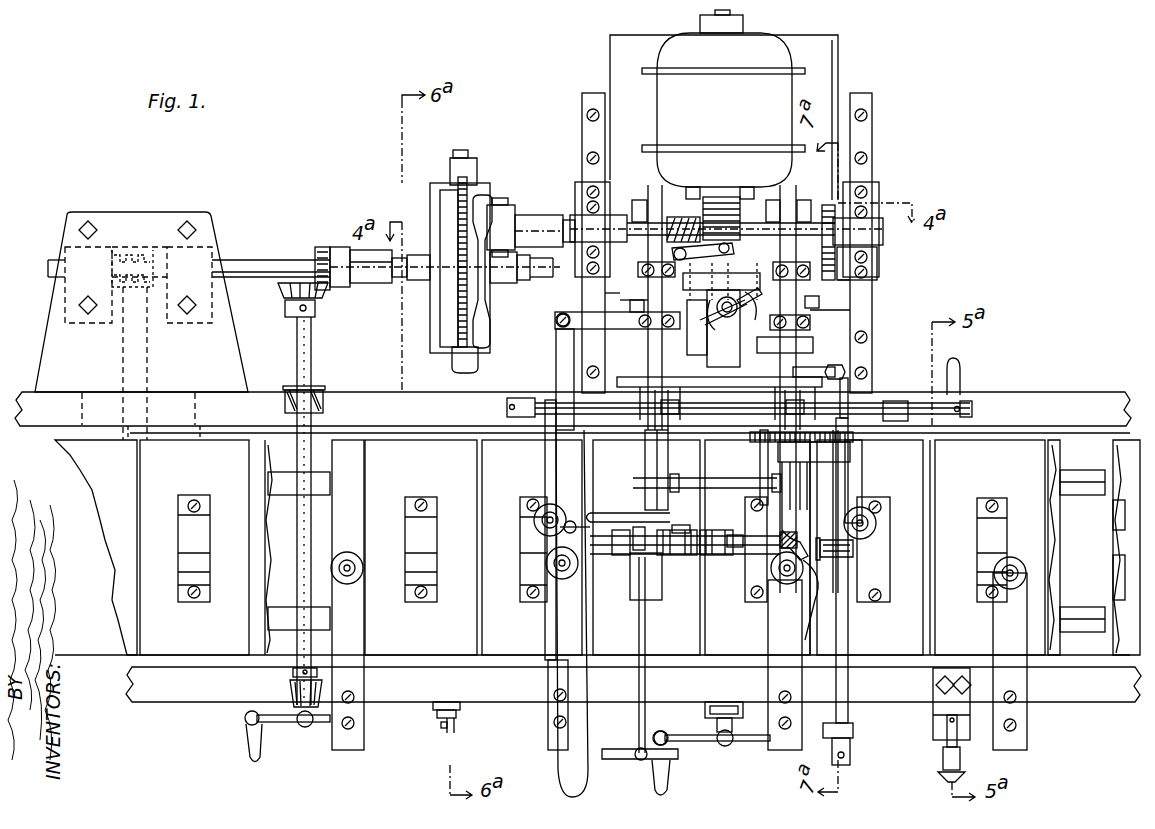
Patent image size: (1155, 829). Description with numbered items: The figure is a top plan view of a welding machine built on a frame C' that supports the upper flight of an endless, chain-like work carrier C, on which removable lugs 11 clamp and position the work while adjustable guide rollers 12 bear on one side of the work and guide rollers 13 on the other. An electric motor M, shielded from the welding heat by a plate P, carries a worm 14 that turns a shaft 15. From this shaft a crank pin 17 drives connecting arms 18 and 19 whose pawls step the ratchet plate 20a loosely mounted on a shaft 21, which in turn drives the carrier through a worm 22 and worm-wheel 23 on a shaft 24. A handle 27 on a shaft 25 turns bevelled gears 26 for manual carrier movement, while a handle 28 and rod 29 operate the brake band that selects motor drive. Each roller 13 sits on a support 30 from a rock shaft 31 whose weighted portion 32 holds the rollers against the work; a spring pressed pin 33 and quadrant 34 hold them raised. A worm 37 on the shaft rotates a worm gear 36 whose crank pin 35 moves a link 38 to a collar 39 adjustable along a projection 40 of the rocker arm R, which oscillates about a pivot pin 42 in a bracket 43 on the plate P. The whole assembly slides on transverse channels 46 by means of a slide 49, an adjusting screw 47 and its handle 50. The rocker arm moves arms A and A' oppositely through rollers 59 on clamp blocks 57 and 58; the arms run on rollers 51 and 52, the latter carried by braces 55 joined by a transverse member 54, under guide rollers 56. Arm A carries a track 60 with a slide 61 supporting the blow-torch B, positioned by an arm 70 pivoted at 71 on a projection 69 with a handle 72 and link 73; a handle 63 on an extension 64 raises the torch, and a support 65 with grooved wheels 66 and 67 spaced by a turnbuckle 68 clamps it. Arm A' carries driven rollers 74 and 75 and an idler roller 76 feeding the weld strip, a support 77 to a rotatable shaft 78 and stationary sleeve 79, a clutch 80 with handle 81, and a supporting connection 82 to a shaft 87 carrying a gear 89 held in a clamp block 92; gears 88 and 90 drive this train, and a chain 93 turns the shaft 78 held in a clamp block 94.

The removable lugs 11 is at (597, 547).
The guide rollers 12 is at (364, 568).
The guide rollers 13 is at (536, 523).
The worm 14 is at (741, 218).
The shaft 15 is at (878, 268).
The crank pin 17 is at (473, 228).
The connecting arm 18 is at (490, 207).
The connecting arm 19 is at (480, 300).
The plate 20a is at (440, 232).
The shaft 21 is at (259, 259).
The worm 22 is at (128, 246).
The worm-wheel 23 is at (80, 290).
The shaft 24 is at (150, 374).
The shaft 25 is at (297, 354).
The bevelled gears 26 is at (288, 288).
The handle 27 is at (246, 738).
The handle 28 is at (447, 735).
The rod 29 is at (447, 433).
The support 30 is at (545, 462).
The rock shaft 31 is at (975, 410).
The portion 32 is at (961, 372).
The spring pressed pin 33 is at (945, 750).
The quadrant 34 is at (934, 728).
The crank pin 35 is at (668, 244).
The worm gear 36 is at (640, 270).
The worm 37 is at (690, 188).
The link 38 is at (703, 251).
The collar 39 is at (733, 274).
The projection 40 is at (746, 188).
The pivot pin 42 is at (708, 318).
The bracket 43 is at (751, 389).
The transverse channels 46 is at (584, 123).
The adjusting screw 47 is at (718, 728).
The slide 49 is at (710, 315).
The handle 50 is at (750, 742).
The rollers 51 is at (638, 200).
The rollers 52 is at (684, 475).
The transverse member 54 is at (720, 490).
The braces 55 is at (850, 390).
The guide rollers 56 is at (640, 408).
The clamp block 57 is at (628, 292).
The clamp block 58 is at (650, 330).
The rollers 59 is at (660, 295).
The supporting track 60 is at (612, 513).
The slide 61 is at (625, 560).
The handle 63 is at (617, 747).
The extension 64 is at (646, 638).
The support 65 is at (662, 580).
The grooved wheel 66 is at (680, 556).
The grooved wheel 67 is at (733, 556).
The turnbuckle 68 is at (684, 525).
The projection 69 is at (617, 321).
The arm 70 is at (557, 363).
The pivot 71 is at (556, 320).
The handle 72 is at (570, 788).
The link 73 is at (565, 530).
The driven roller 74 is at (770, 580).
The driven roller 75 is at (856, 548).
The idler roller 76 is at (808, 615).
The support 77 is at (822, 530).
The rotatable shaft 78 is at (862, 487).
The stationary sleeve 79 is at (849, 628).
The clutch 80 is at (853, 738).
The handle 81 is at (848, 765).
The supporting connection 82 is at (778, 536).
The shaft 87 is at (760, 453).
The gear 88 is at (875, 245).
The gear 89 is at (725, 314).
The gear 90 is at (875, 286).
The clamp block 92 is at (785, 307).
The chain 93 is at (855, 437).
The clamp block 94 is at (814, 452).
The arm A is at (705, 466).
The arm A' is at (772, 485).
The blow-torch B is at (615, 555).
The work carrier C is at (426, 623).
The frame C' is at (578, 552).
The electric motor M is at (723, 98).
The plate P is at (845, 372).
The rocker arm R is at (740, 307).